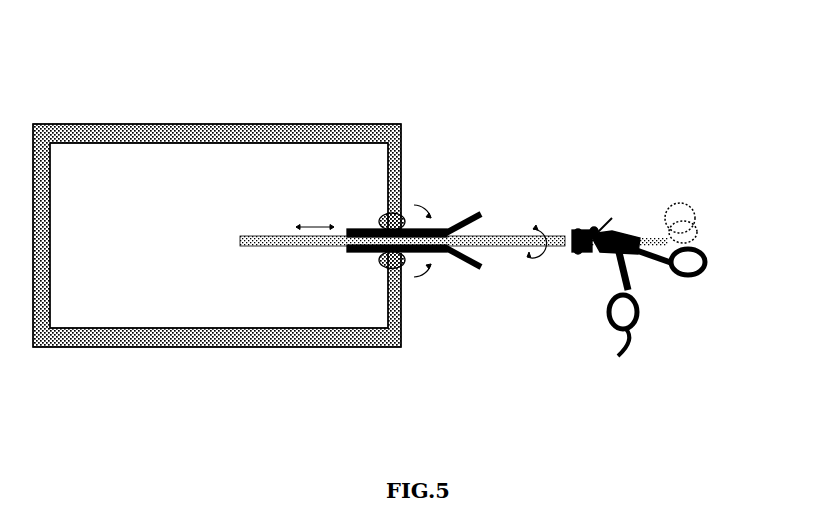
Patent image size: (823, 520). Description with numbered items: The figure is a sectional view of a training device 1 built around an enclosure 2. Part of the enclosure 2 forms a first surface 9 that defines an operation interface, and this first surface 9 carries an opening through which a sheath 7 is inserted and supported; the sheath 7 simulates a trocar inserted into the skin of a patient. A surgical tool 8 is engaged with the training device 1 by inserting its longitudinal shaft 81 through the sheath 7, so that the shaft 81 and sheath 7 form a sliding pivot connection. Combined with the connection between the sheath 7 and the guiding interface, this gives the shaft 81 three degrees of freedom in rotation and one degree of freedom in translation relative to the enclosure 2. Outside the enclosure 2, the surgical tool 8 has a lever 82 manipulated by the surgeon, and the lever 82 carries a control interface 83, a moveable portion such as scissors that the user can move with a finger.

The training device 1 is at (173, 112).
The enclosure 2 is at (268, 124).
The sheath 7 is at (446, 255).
The surgical tool 8 is at (508, 236).
The first surface 9 is at (403, 167).
The shaft 81 is at (258, 236).
The lever 82 is at (660, 212).
The control interface 83 is at (703, 233).